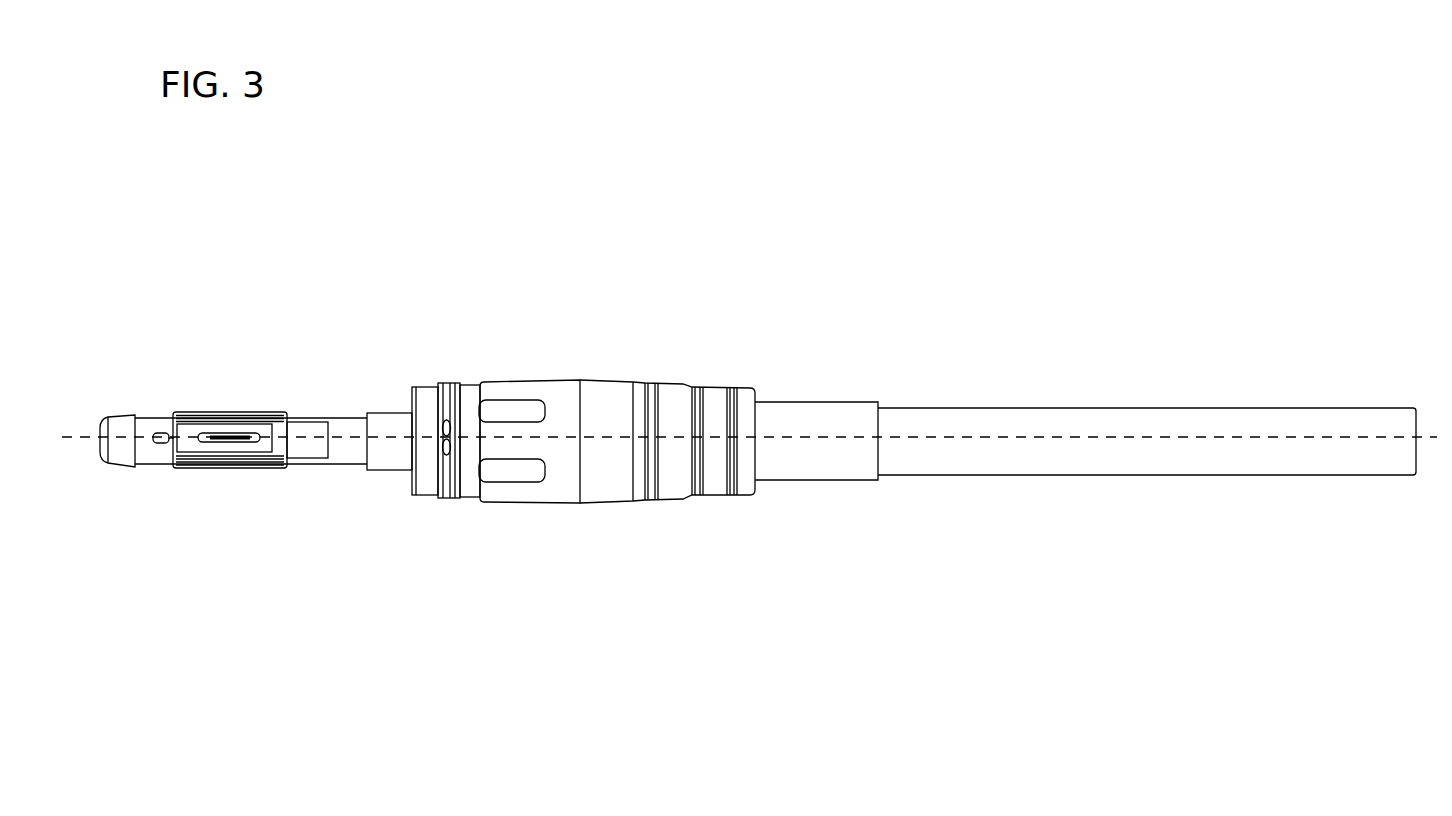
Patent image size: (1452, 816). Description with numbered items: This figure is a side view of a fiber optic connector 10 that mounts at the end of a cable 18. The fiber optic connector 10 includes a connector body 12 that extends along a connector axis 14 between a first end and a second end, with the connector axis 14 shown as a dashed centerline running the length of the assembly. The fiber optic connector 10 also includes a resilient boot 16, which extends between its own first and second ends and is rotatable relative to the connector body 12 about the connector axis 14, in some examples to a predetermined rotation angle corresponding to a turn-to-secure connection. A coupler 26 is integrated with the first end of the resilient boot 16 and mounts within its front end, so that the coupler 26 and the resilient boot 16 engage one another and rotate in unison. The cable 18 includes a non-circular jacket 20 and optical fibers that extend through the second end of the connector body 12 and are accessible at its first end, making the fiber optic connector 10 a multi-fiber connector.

The fiber optic connector 10 is at (515, 670).
The connector body 12 is at (268, 415).
The connector axis 14 is at (1217, 437).
The resilient boot 16 is at (550, 397).
The cable 18 is at (907, 519).
The non-circular jacket 20 is at (827, 412).
The coupler 26 is at (442, 388).